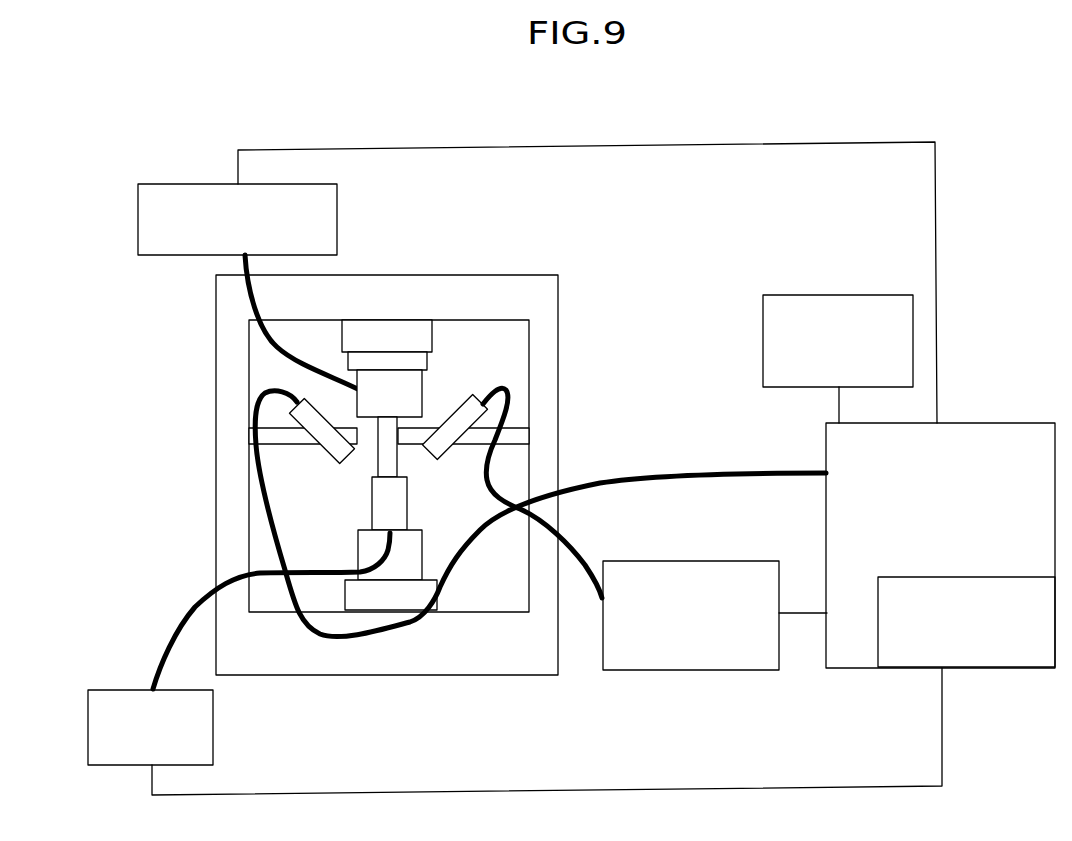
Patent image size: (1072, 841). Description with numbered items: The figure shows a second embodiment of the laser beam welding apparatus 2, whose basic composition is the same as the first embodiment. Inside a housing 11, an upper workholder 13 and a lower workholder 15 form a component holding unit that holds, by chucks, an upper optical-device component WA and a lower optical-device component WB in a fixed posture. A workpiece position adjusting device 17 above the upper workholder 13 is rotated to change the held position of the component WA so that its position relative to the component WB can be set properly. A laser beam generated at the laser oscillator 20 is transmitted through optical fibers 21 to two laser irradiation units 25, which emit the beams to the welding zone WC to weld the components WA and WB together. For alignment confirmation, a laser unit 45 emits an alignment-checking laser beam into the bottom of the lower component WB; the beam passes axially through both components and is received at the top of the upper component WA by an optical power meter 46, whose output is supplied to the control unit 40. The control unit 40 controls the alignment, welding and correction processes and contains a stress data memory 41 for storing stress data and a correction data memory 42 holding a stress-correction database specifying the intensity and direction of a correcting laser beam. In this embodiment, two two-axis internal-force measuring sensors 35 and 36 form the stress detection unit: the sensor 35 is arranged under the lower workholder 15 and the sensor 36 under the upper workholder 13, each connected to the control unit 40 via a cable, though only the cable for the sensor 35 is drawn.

The laser beam welding apparatus 2 is at (557, 109).
The housing 11 is at (448, 274).
The upper workholder 13 is at (527, 330).
The lower workholder 15 is at (360, 552).
The workpiece position adjusting device 17 is at (417, 335).
The laser oscillator 20 is at (662, 671).
The optical fibers 21 is at (550, 530).
The laser irradiation units 25 is at (443, 415).
The 2-axis internal-force measuring sensor 35 is at (345, 597).
The 2-axis internal-force measuring sensor 36 is at (423, 383).
The control unit 40 is at (977, 423).
The stress data memory 41 is at (763, 372).
The correction data memory 42 is at (968, 577).
The laser unit 45 is at (214, 722).
The optical power meter 46 is at (337, 213).
The upper optical-device component WA is at (445, 410).
The lower optical-device component WB is at (388, 513).
The welding zone WC is at (375, 471).